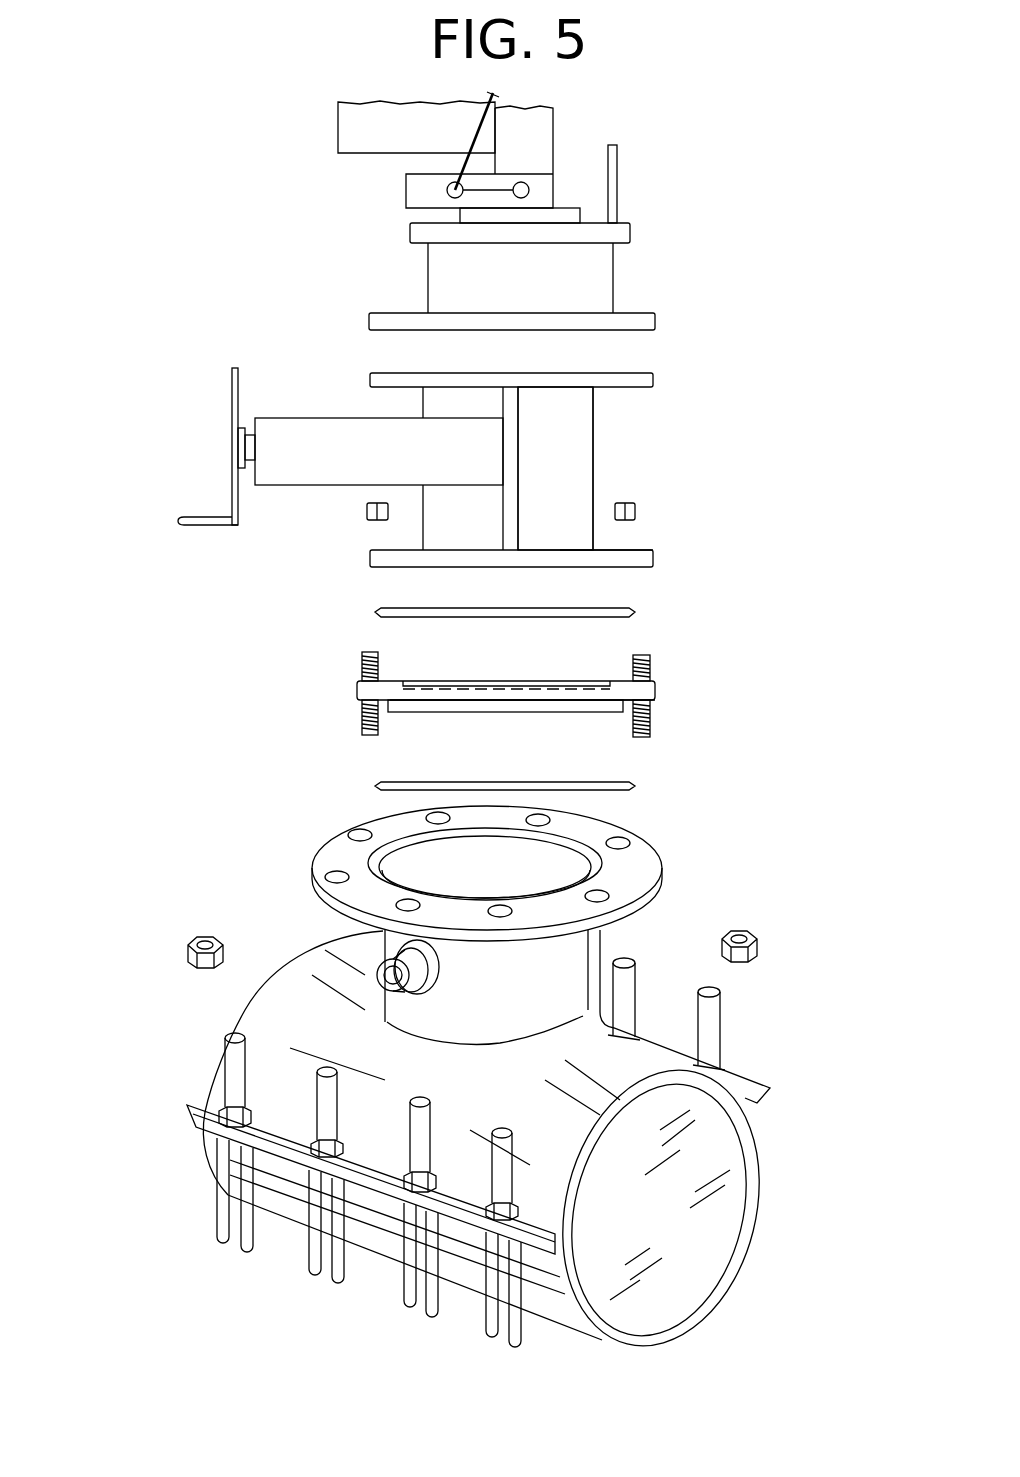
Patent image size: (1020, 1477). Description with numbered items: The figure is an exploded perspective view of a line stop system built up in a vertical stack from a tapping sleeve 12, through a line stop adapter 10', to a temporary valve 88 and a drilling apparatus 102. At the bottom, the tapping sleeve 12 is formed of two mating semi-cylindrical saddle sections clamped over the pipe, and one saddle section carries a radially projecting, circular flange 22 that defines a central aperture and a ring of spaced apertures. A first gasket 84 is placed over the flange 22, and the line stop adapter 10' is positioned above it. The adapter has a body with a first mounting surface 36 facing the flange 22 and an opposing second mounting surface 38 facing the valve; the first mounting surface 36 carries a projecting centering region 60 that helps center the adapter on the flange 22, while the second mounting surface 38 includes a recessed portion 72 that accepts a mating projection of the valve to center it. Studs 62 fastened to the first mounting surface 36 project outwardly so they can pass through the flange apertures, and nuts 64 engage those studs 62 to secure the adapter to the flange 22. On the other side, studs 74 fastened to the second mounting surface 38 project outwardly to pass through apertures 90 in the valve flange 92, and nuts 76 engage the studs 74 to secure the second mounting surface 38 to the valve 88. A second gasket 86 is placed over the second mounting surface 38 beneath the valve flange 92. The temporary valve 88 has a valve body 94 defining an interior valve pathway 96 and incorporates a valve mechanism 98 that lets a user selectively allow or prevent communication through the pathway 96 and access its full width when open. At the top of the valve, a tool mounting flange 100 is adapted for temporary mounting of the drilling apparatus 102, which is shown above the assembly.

The drilling apparatus 102 is at (684, 245).
The tool mounting flange 100 is at (373, 381).
The temporary valve 88 is at (475, 464).
The interior valve pathway 96 is at (574, 456).
The valve body 94 is at (594, 443).
The valve mechanism 98 is at (519, 508).
The nuts 76 is at (624, 503).
The apertures 90 is at (626, 550).
The valve flange 92 is at (656, 558).
The second gasket 86 is at (375, 612).
The first gasket 84 is at (375, 786).
The line stop adapter 10' is at (494, 687).
The second mounting surface 38 is at (656, 684).
The recessed portion 72 is at (522, 686).
The first mounting surface 36 is at (656, 696).
The centering region 60 is at (527, 706).
The studs 74 is at (650, 665).
The studs 62 is at (651, 729).
The flange 22 is at (663, 880).
The nuts 64 is at (213, 935).
The tapping sleeve 12 is at (170, 1192).